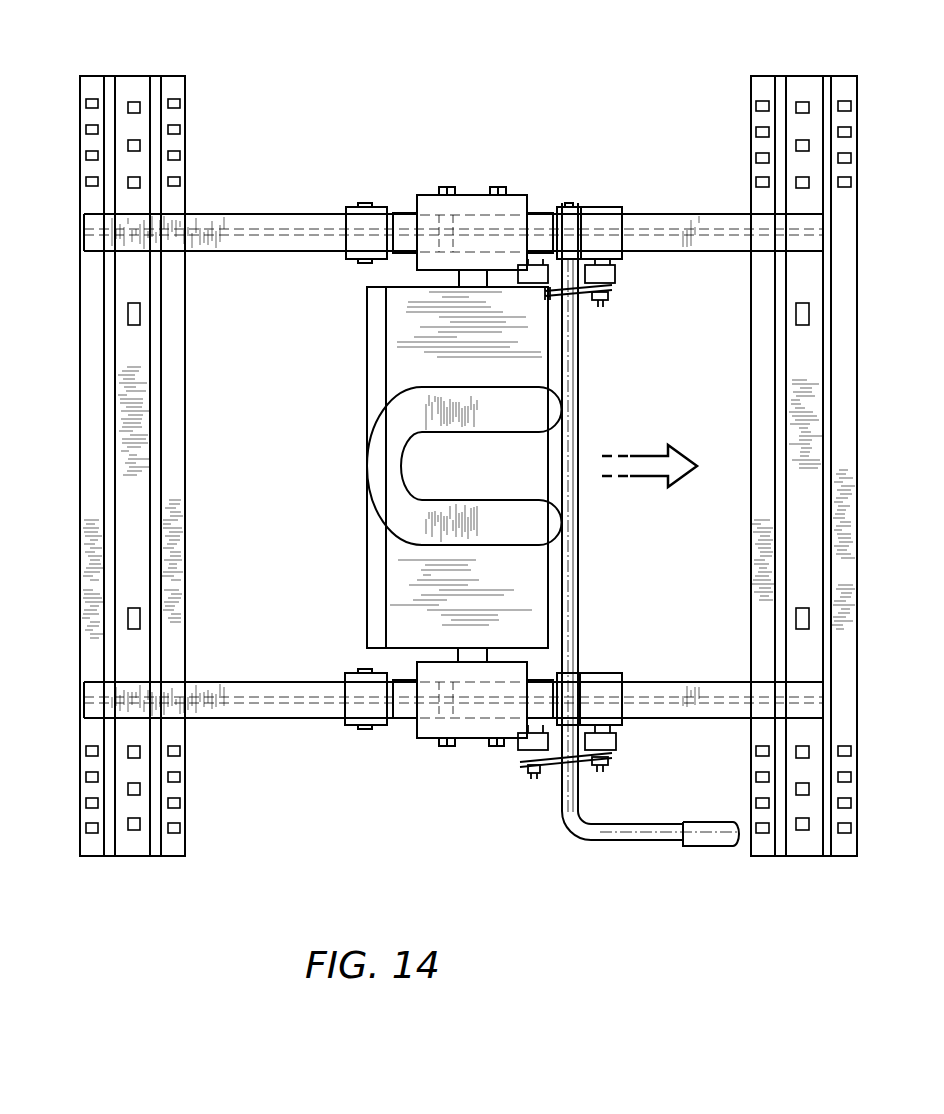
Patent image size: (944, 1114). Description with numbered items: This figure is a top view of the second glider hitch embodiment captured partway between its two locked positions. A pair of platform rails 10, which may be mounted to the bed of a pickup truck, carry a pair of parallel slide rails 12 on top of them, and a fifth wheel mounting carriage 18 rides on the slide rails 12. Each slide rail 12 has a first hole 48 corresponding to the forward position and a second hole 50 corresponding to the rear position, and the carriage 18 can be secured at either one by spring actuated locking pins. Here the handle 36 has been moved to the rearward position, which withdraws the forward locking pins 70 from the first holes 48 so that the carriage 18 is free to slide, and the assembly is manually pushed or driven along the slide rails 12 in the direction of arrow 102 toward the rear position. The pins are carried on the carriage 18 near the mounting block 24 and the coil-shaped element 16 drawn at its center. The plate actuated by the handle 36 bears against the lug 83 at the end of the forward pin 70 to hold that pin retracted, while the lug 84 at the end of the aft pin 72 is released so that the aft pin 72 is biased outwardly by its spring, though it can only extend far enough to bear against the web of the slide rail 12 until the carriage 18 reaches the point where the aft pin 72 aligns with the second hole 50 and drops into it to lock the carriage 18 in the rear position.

The platform rails 10 is at (132, 76).
The slide rails 12 is at (290, 214).
The U-shaped coil 16 is at (380, 455).
The fifth wheel mounting carriage 18 is at (400, 553).
The mounting block 24 is at (465, 207).
The handle 36 is at (650, 836).
The first hole 48 is at (447, 733).
The second hole 50 is at (687, 220).
The forward locking pin 70 is at (535, 700).
The aft locking pin 72 is at (600, 700).
The lug 83 is at (525, 768).
The lug 84 is at (612, 760).
The arrow 102 is at (682, 452).